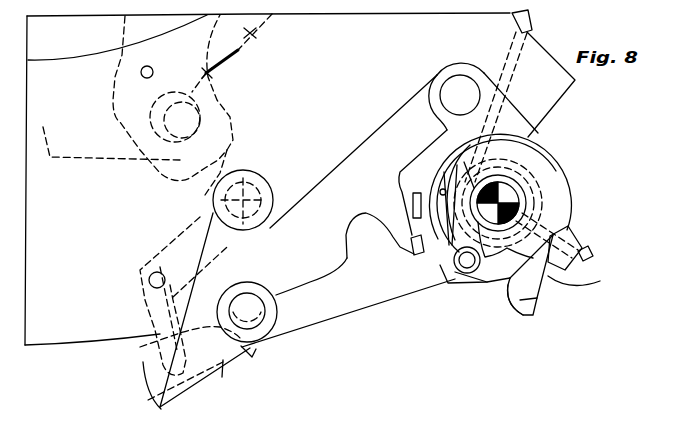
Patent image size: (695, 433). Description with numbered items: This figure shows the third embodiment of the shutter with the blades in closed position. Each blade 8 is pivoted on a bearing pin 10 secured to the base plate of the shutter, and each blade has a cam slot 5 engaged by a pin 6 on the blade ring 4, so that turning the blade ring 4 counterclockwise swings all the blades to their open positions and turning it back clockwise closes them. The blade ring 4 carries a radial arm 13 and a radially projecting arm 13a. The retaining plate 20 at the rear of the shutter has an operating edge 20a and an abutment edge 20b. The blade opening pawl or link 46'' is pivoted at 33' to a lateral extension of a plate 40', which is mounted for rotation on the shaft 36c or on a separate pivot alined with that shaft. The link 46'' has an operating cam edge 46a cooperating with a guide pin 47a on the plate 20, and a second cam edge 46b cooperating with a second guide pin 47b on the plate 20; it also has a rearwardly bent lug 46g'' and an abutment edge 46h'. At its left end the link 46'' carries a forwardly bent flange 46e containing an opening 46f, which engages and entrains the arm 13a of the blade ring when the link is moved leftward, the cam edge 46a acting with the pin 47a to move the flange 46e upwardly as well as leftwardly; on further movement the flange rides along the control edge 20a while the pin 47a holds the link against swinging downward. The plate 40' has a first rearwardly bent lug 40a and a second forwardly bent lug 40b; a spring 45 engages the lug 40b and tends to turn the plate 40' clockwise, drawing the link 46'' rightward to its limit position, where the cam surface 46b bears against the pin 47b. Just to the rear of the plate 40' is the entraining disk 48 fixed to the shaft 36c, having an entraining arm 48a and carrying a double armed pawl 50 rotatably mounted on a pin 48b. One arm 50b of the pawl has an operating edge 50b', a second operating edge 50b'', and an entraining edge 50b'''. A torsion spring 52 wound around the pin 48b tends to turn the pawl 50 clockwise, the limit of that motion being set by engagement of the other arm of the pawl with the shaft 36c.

The blade ring 4 is at (254, 48).
The cam slot 5 is at (153, 107).
The pin 6 is at (167, 128).
The blade 8 is at (131, 30).
The bearing pin 10 is at (141, 75).
The radial arm 13 is at (204, 193).
The radially projecting arm 13a is at (158, 343).
The retaining plate 20 is at (360, 300).
The operating edge 20a is at (63, 345).
The abutment edge 20b is at (553, 98).
The pivot 33' is at (456, 85).
The shaft 36c is at (517, 195).
The plate 40' is at (511, 187).
The first rearwardly bent lug 40a is at (418, 193).
The second forwardly bent lug 40b is at (567, 268).
The spring 45 is at (583, 253).
The blade opening pawl 46'' is at (404, 150).
The operating cam edge 46a is at (323, 278).
The second cam edge 46b is at (195, 214).
The forwardly bent flange 46e is at (158, 408).
The opening 46f is at (222, 380).
The rearwardly bent lug 46g'' is at (396, 208).
The abutment edge 46h' is at (277, 361).
The guide pin 47a is at (246, 305).
The second guide pin 47b is at (250, 187).
The entraining disk 48 is at (548, 176).
The entraining arm 48a is at (470, 284).
The pin 48b is at (463, 268).
The double armed pawl 50 is at (458, 270).
The arm 50b is at (517, 294).
The operating edge 50b' is at (568, 275).
The second operating edge 50b'' is at (549, 317).
The entraining edge 50b''' is at (531, 326).
The torsion spring 52 is at (440, 250).